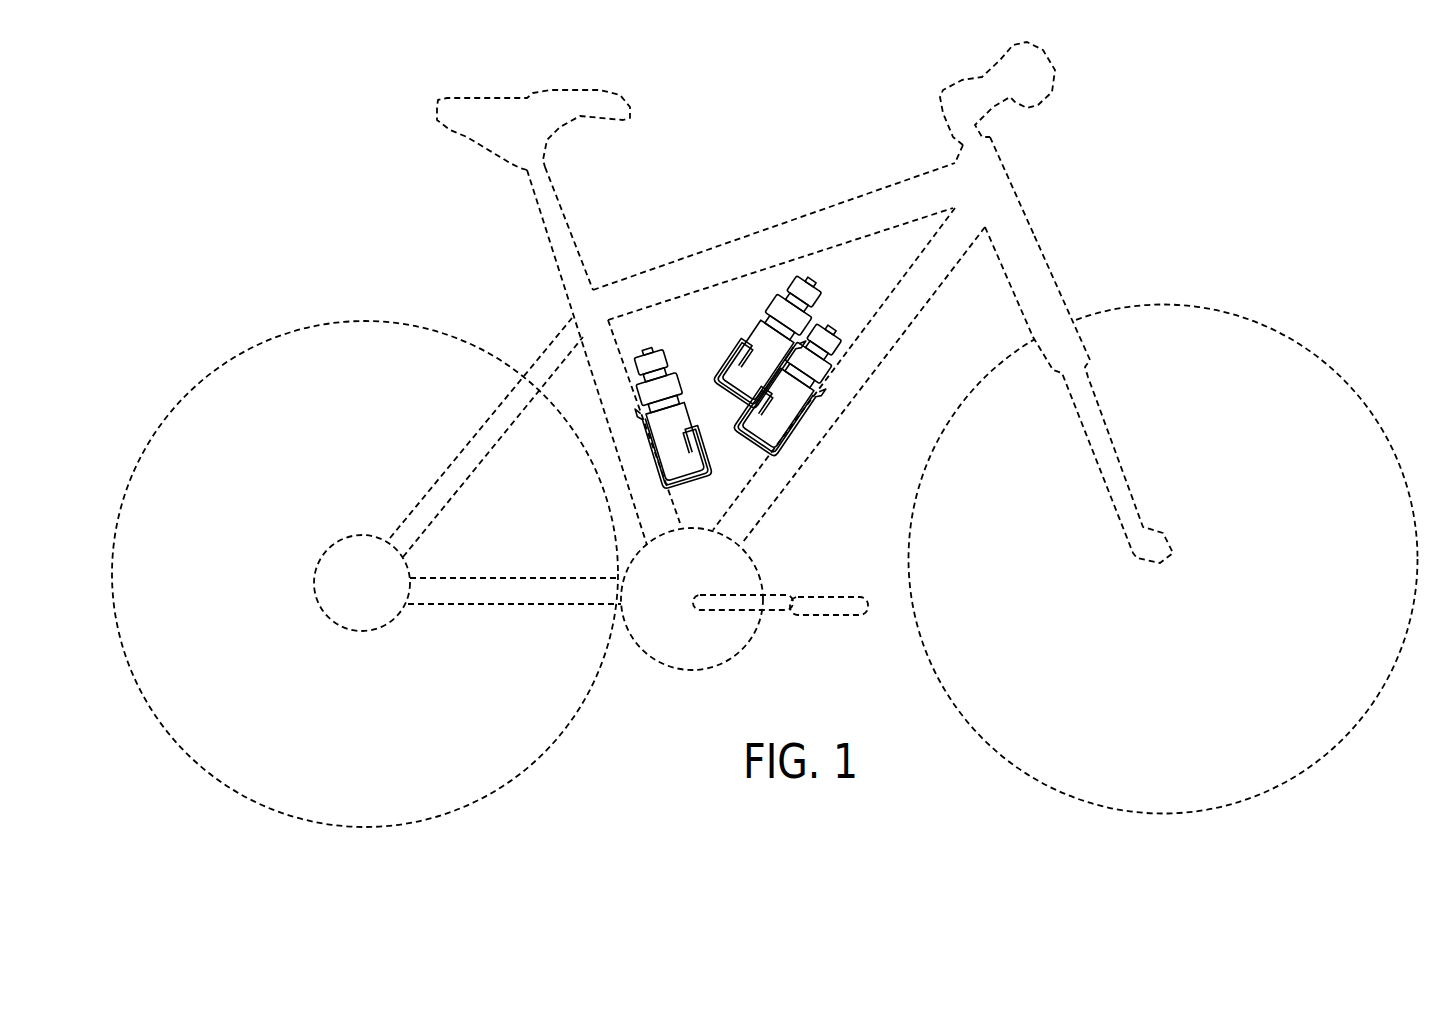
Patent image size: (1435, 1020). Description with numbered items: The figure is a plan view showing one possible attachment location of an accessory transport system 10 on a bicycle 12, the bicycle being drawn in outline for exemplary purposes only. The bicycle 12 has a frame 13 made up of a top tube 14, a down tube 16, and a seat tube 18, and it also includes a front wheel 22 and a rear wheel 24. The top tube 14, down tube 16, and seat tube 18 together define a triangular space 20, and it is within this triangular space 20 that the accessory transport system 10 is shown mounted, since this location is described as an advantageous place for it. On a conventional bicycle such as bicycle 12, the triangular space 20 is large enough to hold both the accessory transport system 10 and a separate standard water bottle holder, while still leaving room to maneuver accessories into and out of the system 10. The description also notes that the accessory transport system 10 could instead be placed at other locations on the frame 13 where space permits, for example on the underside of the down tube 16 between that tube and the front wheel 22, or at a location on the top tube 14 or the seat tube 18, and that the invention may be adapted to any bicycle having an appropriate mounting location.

The accessory transport system 10 is at (693, 348).
The bicycle 12 is at (765, 434).
The frame 13 is at (993, 195).
The top tube 14 is at (735, 253).
The down tube 16 is at (857, 360).
The seat tube 18 is at (634, 457).
The triangular space 20 is at (893, 274).
The front wheel 22 is at (1310, 565).
The rear wheel 24 is at (260, 592).